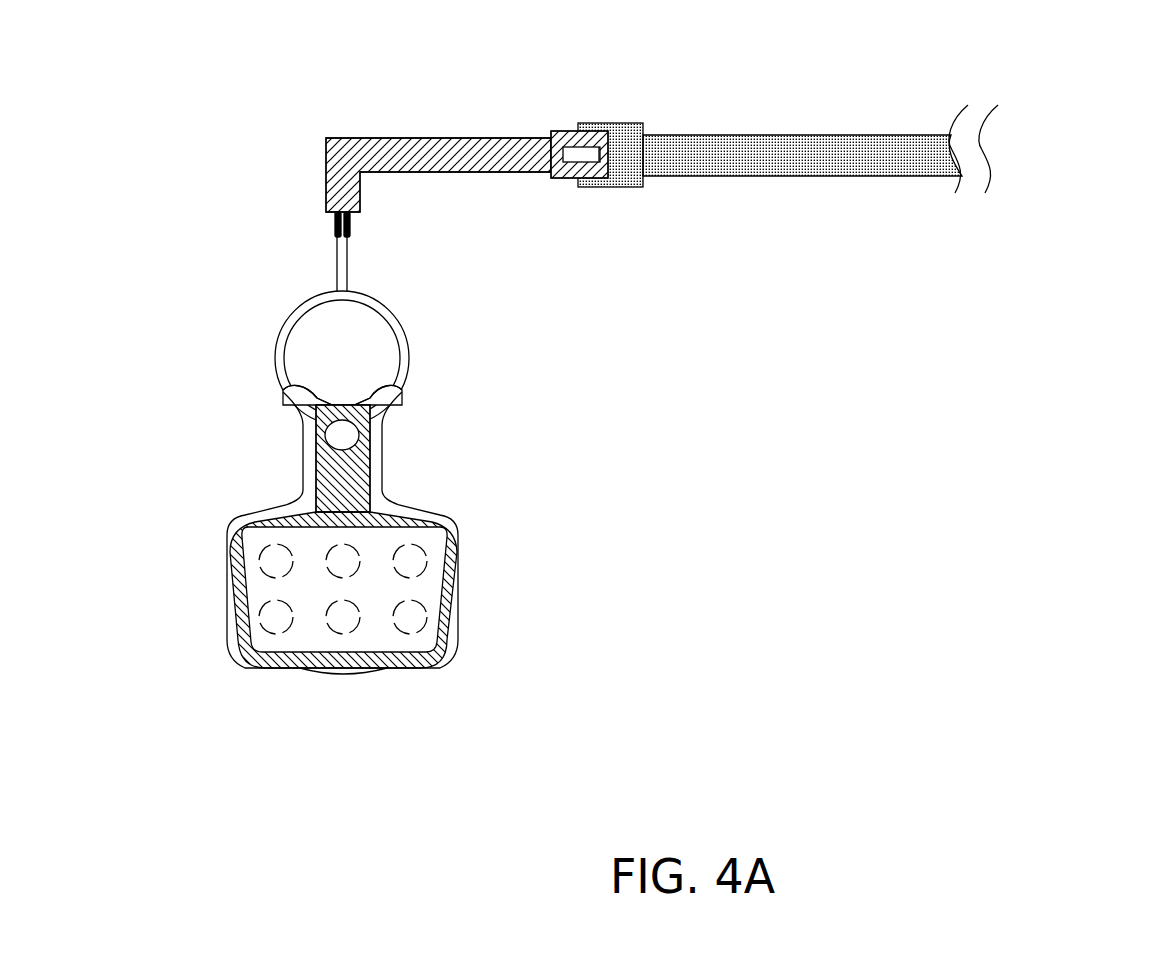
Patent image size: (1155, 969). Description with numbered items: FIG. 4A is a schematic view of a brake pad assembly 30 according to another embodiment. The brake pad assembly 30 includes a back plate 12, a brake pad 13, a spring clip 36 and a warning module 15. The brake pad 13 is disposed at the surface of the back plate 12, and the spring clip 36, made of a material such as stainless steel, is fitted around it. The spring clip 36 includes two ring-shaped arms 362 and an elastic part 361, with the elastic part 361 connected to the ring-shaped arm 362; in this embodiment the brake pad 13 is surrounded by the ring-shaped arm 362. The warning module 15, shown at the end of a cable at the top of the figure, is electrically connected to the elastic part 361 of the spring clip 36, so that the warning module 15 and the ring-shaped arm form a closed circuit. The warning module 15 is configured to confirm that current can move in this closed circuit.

The back plate 12 is at (268, 513).
The brake pad 13 is at (372, 640).
The warning module 15 is at (739, 134).
The brake pad assembly 30 is at (1130, 710).
The spring clip 36 is at (407, 479).
The elastic part 361 is at (372, 425).
The ring-shaped arm 362 is at (448, 573).